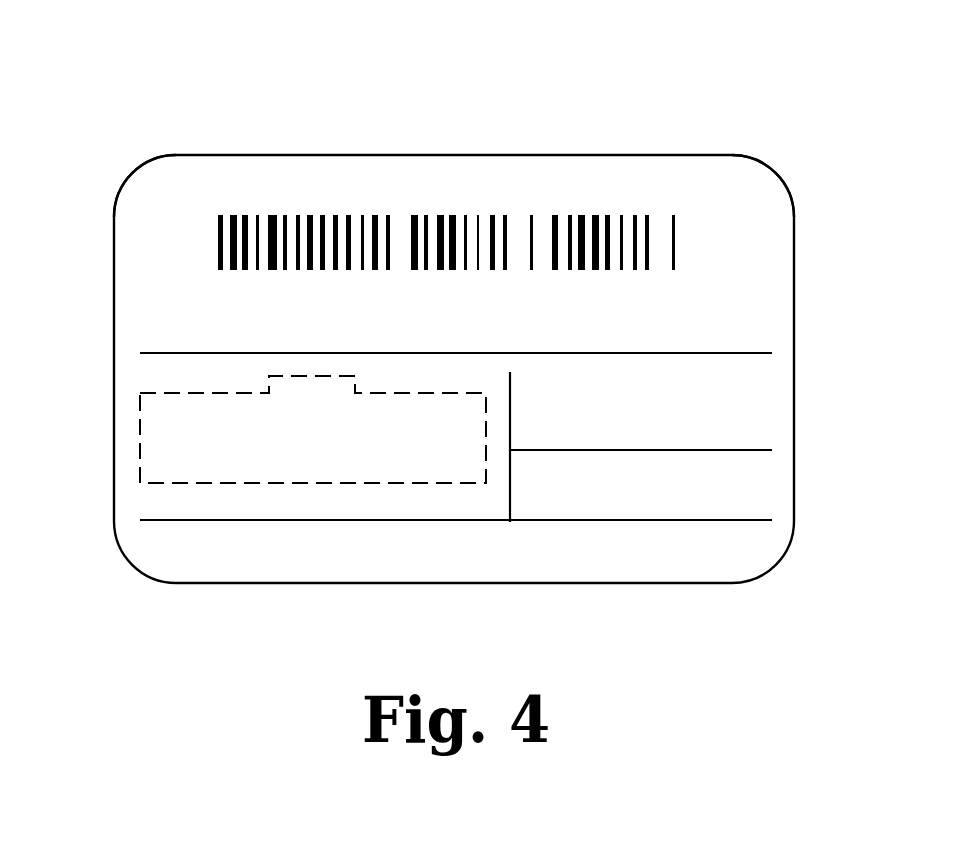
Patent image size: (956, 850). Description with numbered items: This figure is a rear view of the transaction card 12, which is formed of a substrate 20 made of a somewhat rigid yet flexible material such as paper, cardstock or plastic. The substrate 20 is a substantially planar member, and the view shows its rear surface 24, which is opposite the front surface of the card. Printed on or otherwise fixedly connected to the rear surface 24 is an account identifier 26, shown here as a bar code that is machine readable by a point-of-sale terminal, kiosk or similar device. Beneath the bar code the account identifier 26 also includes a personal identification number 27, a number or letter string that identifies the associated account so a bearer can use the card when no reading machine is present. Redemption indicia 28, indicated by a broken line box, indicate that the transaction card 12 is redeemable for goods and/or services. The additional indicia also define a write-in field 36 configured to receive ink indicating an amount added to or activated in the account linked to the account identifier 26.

The transaction card 12 is at (199, 128).
The substrate 20 is at (164, 203).
The rear surface 24 is at (742, 216).
The account identifier 26 is at (675, 242).
The personal identification number 27 is at (677, 299).
The redemption indicia 28 is at (140, 465).
The write-in field 36 is at (727, 407).